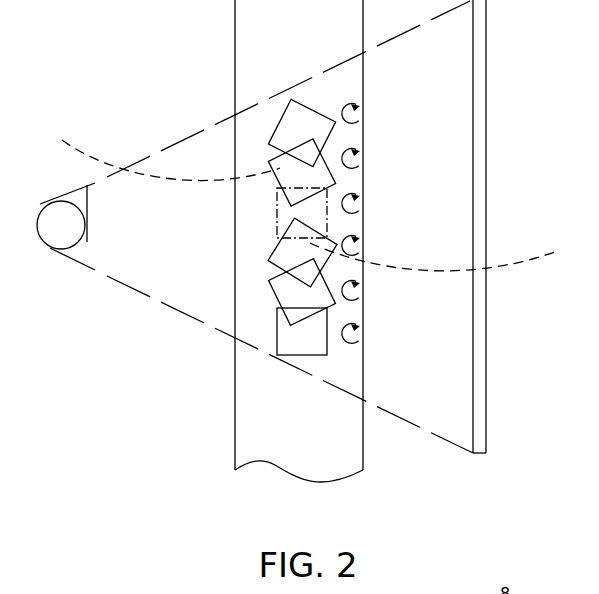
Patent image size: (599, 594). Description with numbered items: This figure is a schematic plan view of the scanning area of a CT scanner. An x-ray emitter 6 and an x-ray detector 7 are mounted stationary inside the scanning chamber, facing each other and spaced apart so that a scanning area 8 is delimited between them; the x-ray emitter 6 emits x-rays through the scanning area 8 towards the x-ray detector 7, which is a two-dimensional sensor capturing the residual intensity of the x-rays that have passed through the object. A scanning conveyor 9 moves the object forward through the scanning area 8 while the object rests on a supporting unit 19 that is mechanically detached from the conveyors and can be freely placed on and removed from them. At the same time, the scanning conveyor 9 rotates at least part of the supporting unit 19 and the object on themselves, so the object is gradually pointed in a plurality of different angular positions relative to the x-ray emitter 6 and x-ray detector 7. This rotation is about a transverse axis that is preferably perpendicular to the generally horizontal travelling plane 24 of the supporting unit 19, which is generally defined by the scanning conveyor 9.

The x-ray emitter 6 is at (58, 230).
The x-ray detector 7 is at (476, 157).
The scanning area 8 is at (201, 98).
The scanning conveyor 9 is at (252, 420).
The supporting unit 19 is at (295, 341).
The travelling plane 24 is at (312, 448).